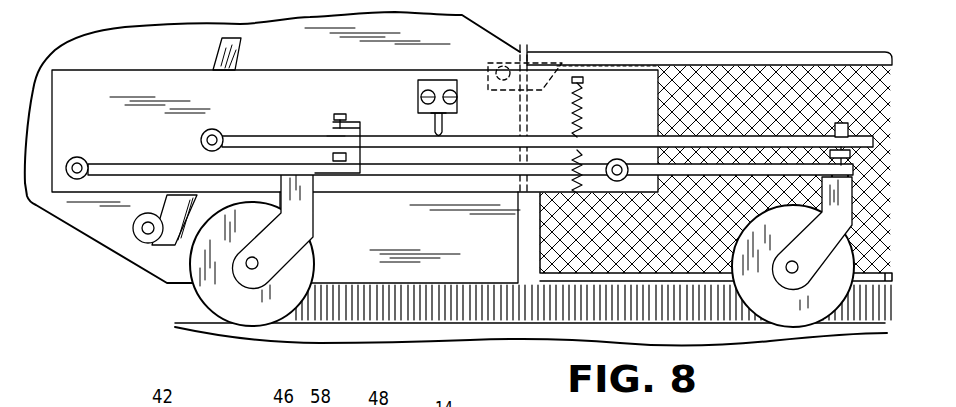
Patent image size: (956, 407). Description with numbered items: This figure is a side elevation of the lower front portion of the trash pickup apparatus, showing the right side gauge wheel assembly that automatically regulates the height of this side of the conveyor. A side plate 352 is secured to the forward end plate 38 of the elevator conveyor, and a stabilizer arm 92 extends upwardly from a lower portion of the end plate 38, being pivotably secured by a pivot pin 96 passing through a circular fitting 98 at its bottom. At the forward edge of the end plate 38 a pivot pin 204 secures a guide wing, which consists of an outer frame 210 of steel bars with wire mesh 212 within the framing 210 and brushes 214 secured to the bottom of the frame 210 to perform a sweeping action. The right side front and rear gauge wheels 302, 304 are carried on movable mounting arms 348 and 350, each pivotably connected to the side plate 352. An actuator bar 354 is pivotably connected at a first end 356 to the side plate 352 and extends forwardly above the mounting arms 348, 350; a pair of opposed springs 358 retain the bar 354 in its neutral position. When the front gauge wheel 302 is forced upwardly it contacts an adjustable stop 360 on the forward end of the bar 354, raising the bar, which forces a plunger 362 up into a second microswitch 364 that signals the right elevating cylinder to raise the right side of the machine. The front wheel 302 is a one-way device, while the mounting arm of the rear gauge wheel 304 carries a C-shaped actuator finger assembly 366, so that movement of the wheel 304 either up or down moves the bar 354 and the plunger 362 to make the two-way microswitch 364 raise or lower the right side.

The forward end plate 38 is at (102, 245).
The stabilizer arm 92 is at (243, 50).
The pivot pin 96 is at (155, 240).
The circular fitting 98 is at (143, 244).
The pivot pin 204 is at (505, 68).
The outer frame 210 is at (717, 63).
The wire mesh 212 is at (792, 97).
The brushes 214 is at (495, 312).
The right side front gauge wheel 302 is at (803, 320).
The right side rear gauge wheel 304 is at (208, 307).
The mounting arm 348 is at (750, 172).
The mounting arm 350 is at (95, 165).
The side plate 352 is at (97, 97).
The actuator bar 354 is at (327, 143).
The first end 356 is at (215, 135).
The opposed springs 358 is at (585, 105).
The adjustable stop 360 is at (855, 155).
The plunger 362 is at (444, 125).
The second microswitch 364 is at (418, 90).
The C-shaped actuator finger assembly 366 is at (362, 132).